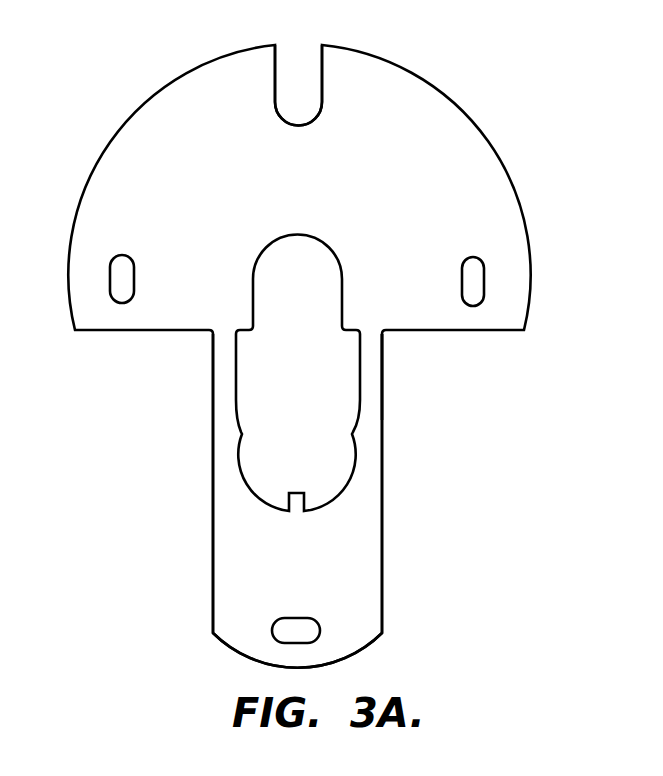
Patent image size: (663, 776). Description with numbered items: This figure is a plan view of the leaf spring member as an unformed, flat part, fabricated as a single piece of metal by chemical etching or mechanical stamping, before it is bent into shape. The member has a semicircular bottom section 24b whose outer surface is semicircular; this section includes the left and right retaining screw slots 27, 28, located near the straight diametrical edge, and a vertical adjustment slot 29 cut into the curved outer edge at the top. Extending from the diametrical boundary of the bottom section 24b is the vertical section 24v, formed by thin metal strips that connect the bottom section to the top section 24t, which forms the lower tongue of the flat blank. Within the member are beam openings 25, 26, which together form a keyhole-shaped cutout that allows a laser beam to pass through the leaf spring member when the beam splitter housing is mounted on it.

The bottom section 24b is at (463, 110).
The top section 24t is at (382, 538).
The vertical section 24v is at (382, 372).
The beam opening 25 is at (326, 455).
The beam opening 26 is at (303, 262).
The left retaining screw slot 27 is at (123, 255).
The right retaining screw slot 28 is at (472, 257).
The vertical adjustment slot 29 is at (282, 57).